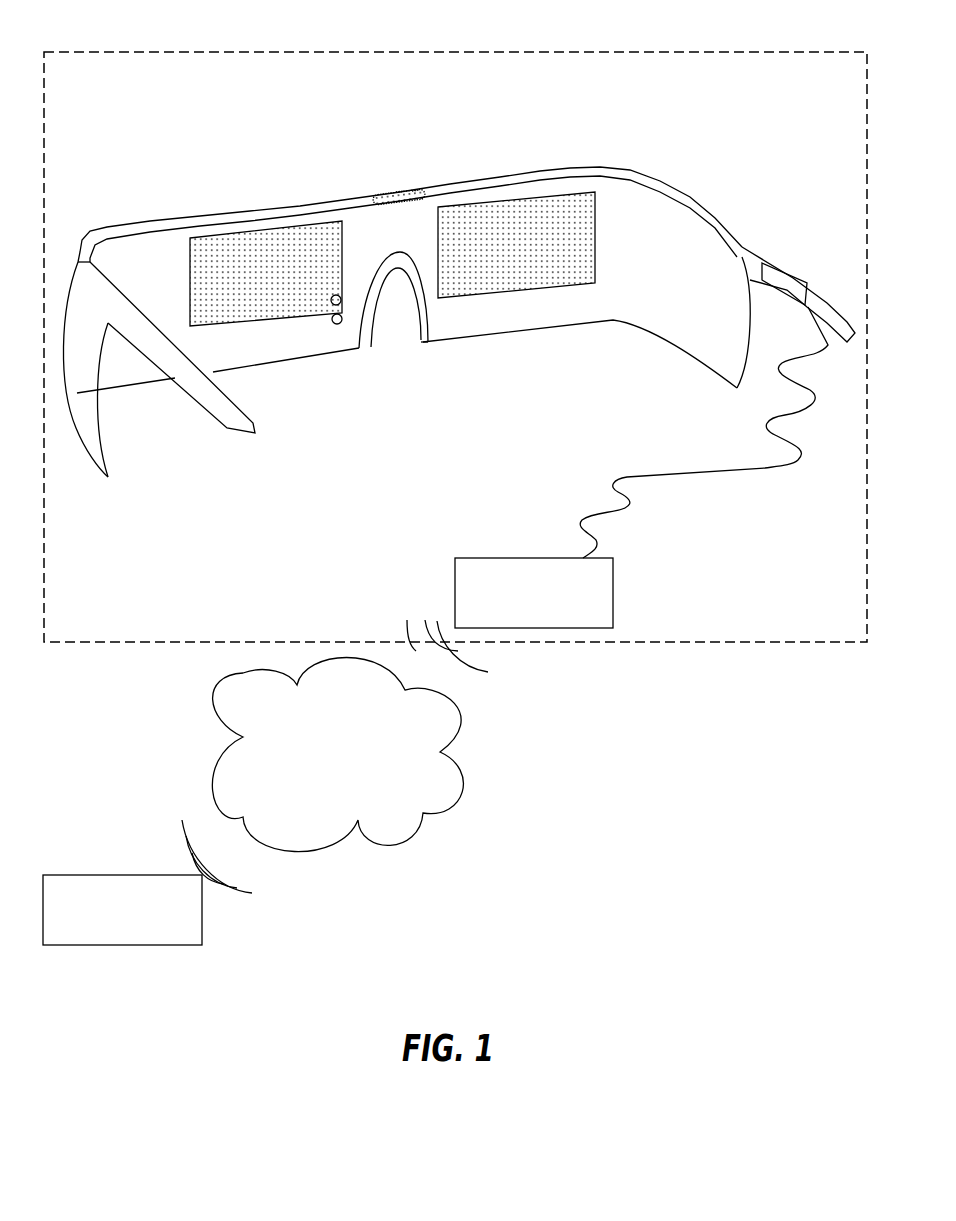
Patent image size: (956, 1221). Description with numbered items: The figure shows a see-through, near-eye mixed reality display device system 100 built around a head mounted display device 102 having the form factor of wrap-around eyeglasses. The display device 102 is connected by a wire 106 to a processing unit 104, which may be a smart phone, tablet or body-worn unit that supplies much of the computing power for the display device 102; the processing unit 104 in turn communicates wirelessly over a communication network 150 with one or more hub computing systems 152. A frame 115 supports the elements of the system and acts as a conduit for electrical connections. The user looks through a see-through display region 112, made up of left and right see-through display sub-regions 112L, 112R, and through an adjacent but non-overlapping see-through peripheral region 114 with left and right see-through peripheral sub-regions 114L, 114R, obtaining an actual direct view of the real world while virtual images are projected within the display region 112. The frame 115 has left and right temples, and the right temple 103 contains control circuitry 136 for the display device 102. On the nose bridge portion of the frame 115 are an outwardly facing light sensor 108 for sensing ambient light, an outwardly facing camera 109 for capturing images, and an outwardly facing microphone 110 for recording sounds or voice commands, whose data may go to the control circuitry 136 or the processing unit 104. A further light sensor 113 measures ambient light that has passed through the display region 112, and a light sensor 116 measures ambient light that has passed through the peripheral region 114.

The see-through, near-eye mixed reality display device system 100 is at (258, 39).
The head mounted display device 102 is at (218, 158).
The temple 103 is at (737, 247).
The processing unit 104 is at (518, 603).
The wire 106 is at (695, 465).
The light sensor 108 is at (382, 193).
The camera 109 is at (402, 195).
The microphone 110 is at (418, 192).
The see-through display region 112 is at (392, 207).
The left see-through display sub-region 112L is at (245, 284).
The right see-through display sub-region 112R is at (502, 257).
The light sensor 113 is at (341, 305).
The see-through peripheral region 114 is at (407, 370).
The left see-through peripheral sub-region 114L is at (219, 353).
The right see-through peripheral sub-region 114R is at (618, 309).
The frame 115 is at (127, 230).
The light sensor 116 is at (340, 324).
The control circuitry 136 is at (778, 280).
The communication network 150 is at (327, 787).
The hub computing system 152 is at (108, 920).